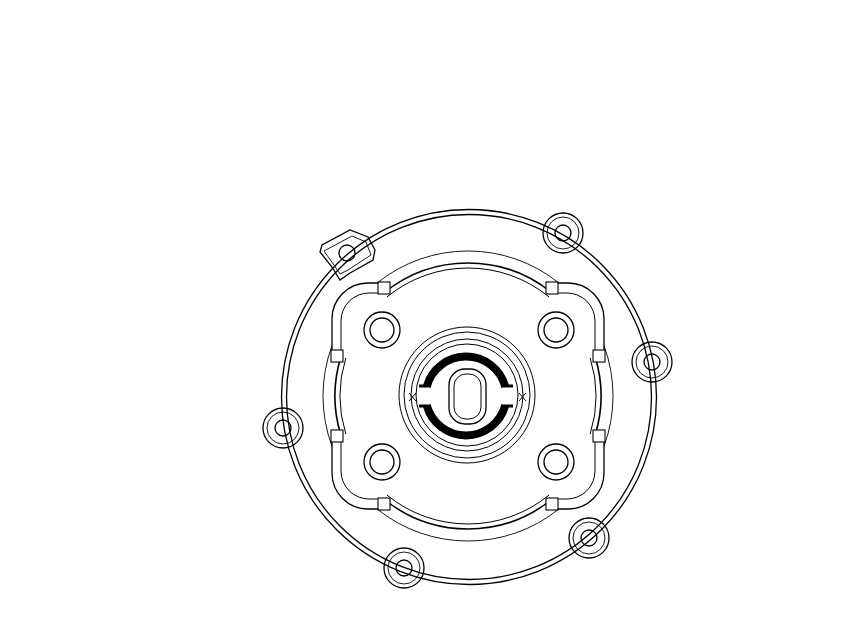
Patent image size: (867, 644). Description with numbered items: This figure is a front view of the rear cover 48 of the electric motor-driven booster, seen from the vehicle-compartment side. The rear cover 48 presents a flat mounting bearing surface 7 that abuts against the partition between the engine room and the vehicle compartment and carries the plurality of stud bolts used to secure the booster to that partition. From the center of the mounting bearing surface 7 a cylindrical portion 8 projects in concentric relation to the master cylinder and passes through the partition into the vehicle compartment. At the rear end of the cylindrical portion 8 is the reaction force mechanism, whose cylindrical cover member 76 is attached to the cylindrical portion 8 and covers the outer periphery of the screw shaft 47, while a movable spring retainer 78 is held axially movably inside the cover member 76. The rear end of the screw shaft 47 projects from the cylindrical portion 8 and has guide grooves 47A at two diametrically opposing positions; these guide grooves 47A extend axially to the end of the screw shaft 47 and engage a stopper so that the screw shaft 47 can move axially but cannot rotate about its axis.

The housing 48 is at (503, 215).
The mounting bearing surface 7 is at (531, 316).
The cylindrical portion 8 is at (535, 395).
The cover member 76 is at (467, 350).
The movable spring retainer 78 is at (412, 422).
The guide grooves 47A is at (413, 386).
The screw shaft 47 is at (467, 435).